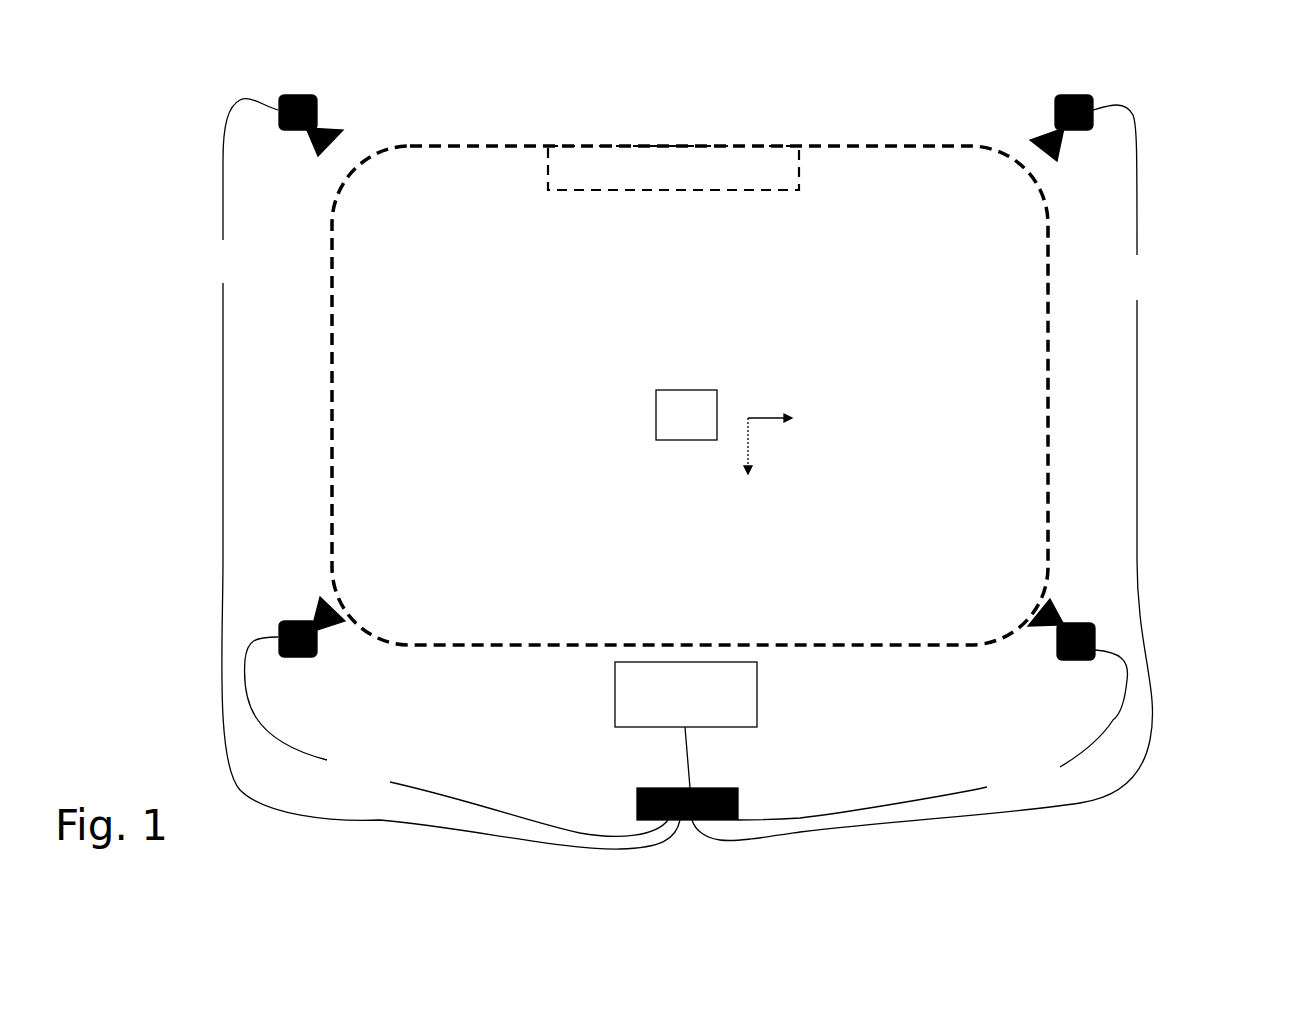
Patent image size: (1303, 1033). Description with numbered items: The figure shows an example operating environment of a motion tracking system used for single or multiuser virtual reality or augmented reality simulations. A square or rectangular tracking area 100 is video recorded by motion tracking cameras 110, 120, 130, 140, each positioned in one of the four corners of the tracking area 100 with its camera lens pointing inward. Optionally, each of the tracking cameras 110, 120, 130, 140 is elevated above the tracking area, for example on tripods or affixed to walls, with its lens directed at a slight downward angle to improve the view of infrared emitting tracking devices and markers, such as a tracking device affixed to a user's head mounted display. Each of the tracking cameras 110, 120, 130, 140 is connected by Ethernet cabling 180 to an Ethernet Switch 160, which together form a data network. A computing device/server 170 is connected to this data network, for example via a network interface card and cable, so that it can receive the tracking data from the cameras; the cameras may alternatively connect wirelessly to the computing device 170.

The tracking area 100 is at (1050, 245).
The tracking camera 110 is at (278, 627).
The tracking camera 120 is at (283, 97).
The tracking camera 130 is at (1093, 100).
The tracking camera 140 is at (1095, 633).
The Ethernet Switch 160 is at (656, 440).
The computing device/server 170 is at (757, 712).
The Ethernet cabling 180 is at (223, 202).